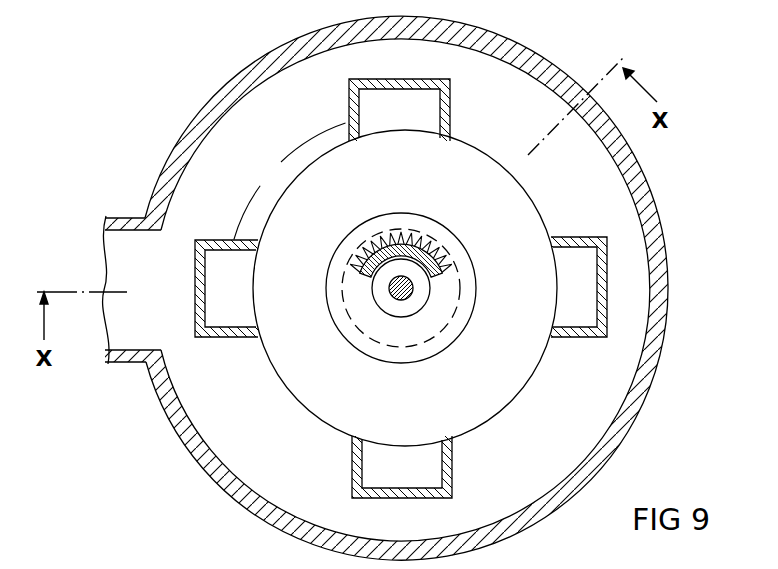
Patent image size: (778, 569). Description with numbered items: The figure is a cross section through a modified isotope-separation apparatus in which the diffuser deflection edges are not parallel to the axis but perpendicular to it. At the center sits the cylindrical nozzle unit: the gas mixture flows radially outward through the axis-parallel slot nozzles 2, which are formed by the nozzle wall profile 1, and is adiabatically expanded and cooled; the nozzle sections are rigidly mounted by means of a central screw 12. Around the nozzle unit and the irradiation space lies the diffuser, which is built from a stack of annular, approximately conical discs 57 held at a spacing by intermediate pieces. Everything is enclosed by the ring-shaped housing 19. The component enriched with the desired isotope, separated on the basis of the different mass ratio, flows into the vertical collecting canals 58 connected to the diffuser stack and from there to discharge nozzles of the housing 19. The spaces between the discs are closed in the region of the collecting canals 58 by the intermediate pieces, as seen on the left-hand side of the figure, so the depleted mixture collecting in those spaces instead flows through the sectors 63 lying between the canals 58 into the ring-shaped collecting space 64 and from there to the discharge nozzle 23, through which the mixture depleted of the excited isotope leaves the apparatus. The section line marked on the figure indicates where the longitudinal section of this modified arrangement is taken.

The nozzle wall profile 1 is at (367, 253).
The slot nozzles 2 is at (440, 253).
The central screw 12 is at (404, 288).
The ring-shaped housing 19 is at (660, 312).
The discharge nozzle 23 is at (118, 219).
The annular conical discs 57 is at (271, 370).
The vertical collecting canals 58 is at (222, 318).
The sectors 63 is at (290, 181).
The ring-shaped collecting space 64 is at (198, 161).